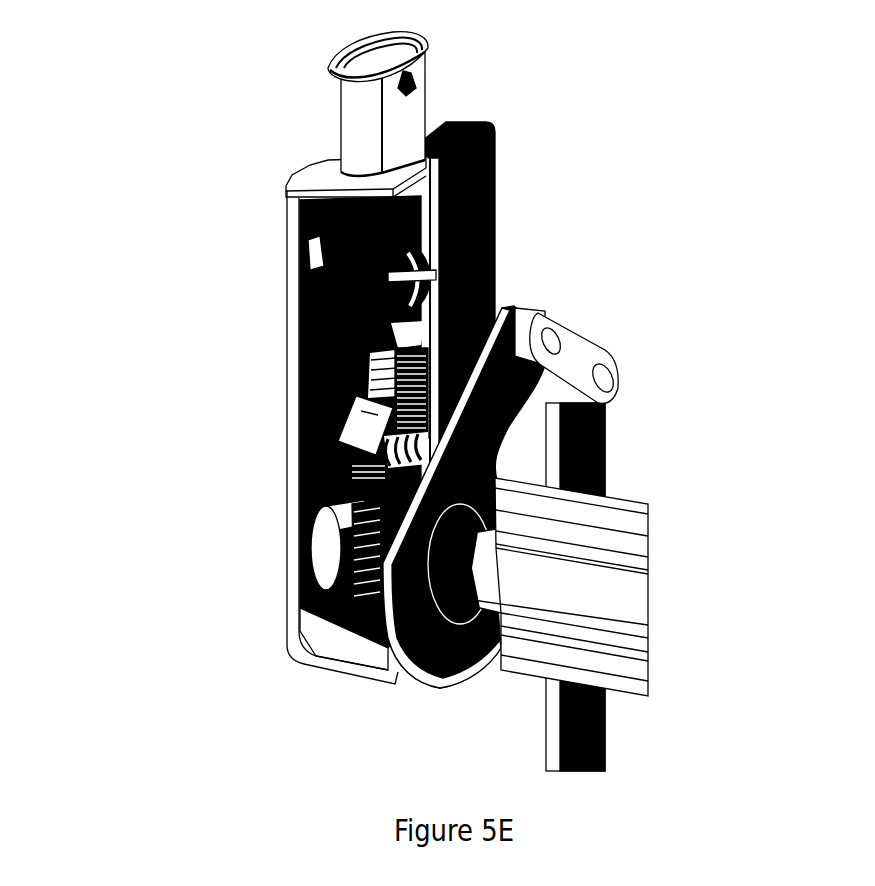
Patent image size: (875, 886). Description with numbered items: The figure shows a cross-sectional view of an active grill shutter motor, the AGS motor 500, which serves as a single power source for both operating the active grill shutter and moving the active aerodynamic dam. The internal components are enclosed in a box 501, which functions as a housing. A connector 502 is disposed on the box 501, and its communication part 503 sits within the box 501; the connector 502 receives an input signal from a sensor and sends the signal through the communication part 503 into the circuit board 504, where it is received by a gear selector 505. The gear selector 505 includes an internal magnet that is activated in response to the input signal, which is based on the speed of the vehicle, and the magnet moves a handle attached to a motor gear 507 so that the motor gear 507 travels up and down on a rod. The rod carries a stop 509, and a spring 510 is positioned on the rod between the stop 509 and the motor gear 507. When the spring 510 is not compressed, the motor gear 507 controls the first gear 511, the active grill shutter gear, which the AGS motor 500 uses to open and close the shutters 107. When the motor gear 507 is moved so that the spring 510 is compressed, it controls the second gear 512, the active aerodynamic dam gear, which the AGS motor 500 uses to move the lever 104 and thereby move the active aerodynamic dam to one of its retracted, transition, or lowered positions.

The AGS motor 500 is at (552, 167).
The box 501 is at (295, 308).
The connector 502 is at (333, 117).
The communication part 503 is at (347, 193).
The circuit board 504 is at (303, 240).
The gear selector 505 is at (368, 403).
The motor gear 507 is at (348, 465).
The stop 509 is at (350, 486).
The spring 510 is at (348, 459).
The first gear 511 is at (328, 543).
The second gear 512 is at (367, 605).
The lever 104 is at (618, 384).
The shutters 107 is at (612, 595).